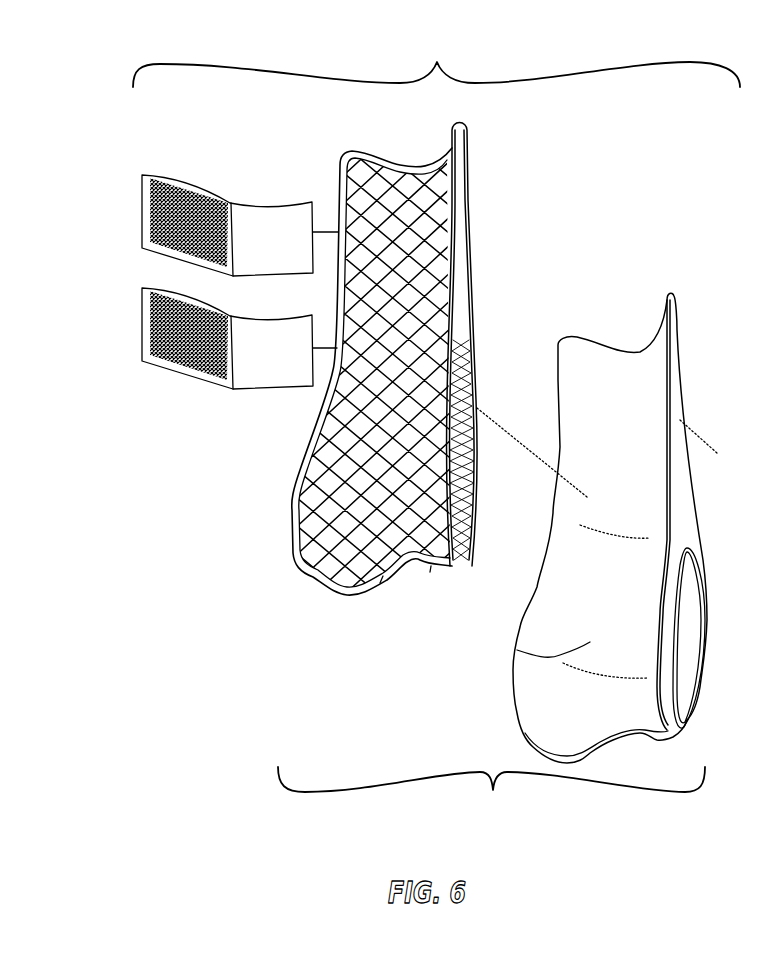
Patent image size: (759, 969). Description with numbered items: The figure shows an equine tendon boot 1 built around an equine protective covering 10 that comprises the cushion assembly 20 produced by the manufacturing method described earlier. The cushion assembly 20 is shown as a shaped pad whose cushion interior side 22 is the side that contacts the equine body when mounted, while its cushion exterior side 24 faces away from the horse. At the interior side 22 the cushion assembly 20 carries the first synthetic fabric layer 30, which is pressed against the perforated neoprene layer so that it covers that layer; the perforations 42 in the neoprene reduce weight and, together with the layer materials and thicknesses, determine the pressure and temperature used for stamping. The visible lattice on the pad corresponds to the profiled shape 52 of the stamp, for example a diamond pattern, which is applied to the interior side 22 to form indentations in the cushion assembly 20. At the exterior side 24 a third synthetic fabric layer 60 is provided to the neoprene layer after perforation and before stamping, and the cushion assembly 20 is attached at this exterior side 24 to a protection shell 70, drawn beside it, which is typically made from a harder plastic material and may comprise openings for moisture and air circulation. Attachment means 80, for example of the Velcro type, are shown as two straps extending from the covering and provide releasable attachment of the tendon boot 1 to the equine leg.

The equine tendon boot 1 is at (478, 81).
The equine protective covering 10 is at (381, 784).
The cushion assembly 20 is at (340, 392).
The cushion interior side 22 is at (340, 392).
The cushion exterior side 24 is at (477, 444).
The first synthetic fabric layer 30 is at (441, 595).
The perforations 42 is at (381, 582).
The profiled shape 52 is at (367, 487).
The third synthetic fabric layer 60 is at (489, 345).
The protection shell 70 is at (517, 650).
The attachment means 80 is at (207, 390).